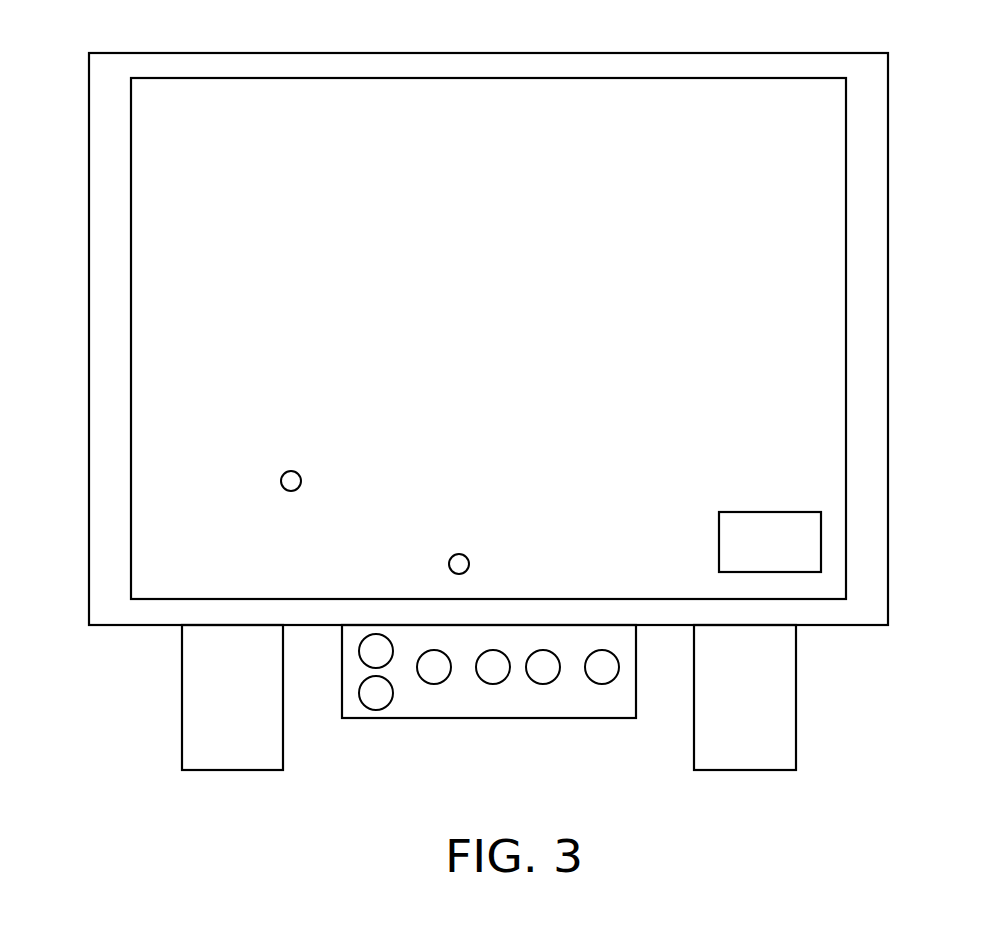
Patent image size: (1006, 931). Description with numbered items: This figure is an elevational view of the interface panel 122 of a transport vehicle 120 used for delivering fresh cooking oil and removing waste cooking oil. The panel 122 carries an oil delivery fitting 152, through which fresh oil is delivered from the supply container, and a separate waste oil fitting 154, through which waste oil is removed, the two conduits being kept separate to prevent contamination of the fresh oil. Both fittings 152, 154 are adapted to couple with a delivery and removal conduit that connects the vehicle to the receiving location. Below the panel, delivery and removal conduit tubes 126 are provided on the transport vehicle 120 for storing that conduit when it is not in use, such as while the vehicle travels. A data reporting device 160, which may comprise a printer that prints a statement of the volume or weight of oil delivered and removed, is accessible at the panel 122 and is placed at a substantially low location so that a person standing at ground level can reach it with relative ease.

The transport vehicle 120 is at (889, 137).
The interface panel 122 is at (818, 255).
The delivery and removal conduit tubes 126 is at (493, 684).
The oil delivery fitting 152 is at (459, 554).
The waste oil fitting 154 is at (291, 470).
The data reporting device 160 is at (770, 512).